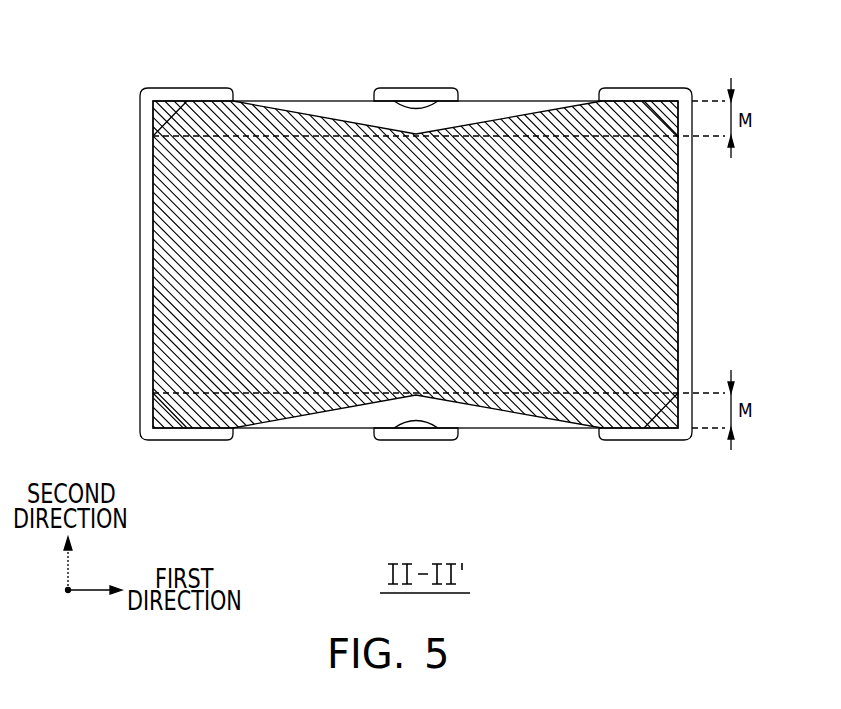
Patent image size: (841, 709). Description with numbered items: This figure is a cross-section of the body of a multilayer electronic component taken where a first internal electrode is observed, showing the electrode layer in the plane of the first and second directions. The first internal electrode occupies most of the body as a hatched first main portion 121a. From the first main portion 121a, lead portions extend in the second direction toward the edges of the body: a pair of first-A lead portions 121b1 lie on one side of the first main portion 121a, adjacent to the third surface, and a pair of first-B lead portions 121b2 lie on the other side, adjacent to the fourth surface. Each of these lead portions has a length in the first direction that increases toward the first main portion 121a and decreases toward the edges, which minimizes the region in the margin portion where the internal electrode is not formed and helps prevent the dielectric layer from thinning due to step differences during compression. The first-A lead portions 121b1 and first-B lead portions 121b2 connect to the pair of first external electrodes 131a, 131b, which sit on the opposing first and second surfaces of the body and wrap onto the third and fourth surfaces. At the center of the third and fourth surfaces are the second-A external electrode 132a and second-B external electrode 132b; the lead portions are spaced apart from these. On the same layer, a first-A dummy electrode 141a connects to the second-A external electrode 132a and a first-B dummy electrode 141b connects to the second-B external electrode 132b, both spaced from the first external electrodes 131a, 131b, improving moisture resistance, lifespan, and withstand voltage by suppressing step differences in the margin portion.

The first main portion 121a is at (170, 233).
The first-A lead portions 121b1 is at (250, 120).
The first-B lead portions 121b2 is at (250, 407).
The first external electrode 131a is at (168, 88).
The first external electrode 131b is at (666, 88).
The first-A dummy electrode 141a is at (404, 93).
The first-B dummy electrode 141b is at (406, 437).
The second-A external electrode 132a is at (436, 100).
The second-B external electrode 132b is at (436, 430).